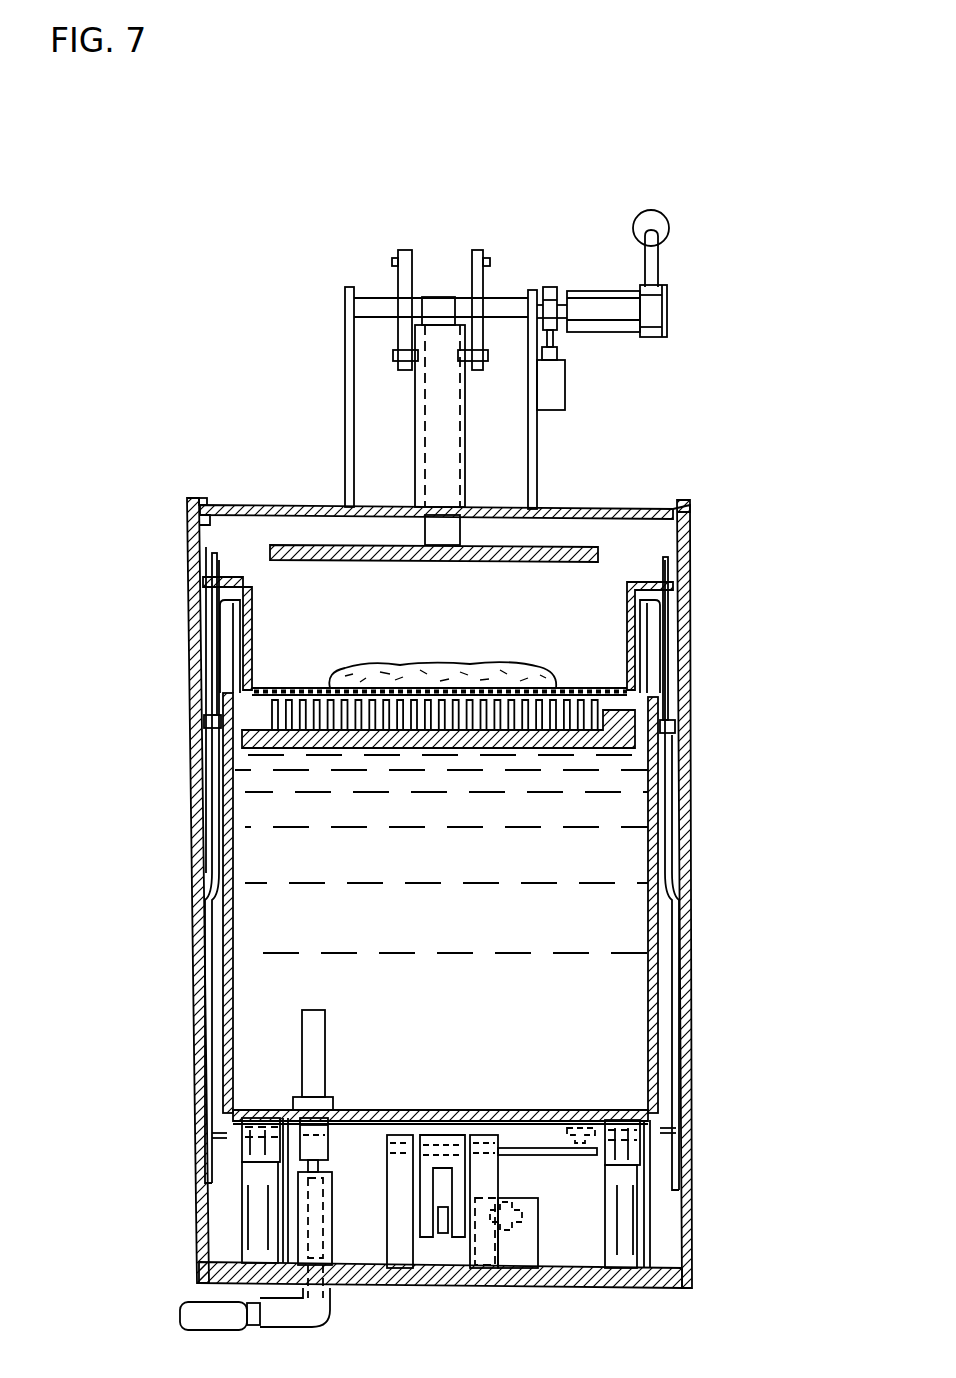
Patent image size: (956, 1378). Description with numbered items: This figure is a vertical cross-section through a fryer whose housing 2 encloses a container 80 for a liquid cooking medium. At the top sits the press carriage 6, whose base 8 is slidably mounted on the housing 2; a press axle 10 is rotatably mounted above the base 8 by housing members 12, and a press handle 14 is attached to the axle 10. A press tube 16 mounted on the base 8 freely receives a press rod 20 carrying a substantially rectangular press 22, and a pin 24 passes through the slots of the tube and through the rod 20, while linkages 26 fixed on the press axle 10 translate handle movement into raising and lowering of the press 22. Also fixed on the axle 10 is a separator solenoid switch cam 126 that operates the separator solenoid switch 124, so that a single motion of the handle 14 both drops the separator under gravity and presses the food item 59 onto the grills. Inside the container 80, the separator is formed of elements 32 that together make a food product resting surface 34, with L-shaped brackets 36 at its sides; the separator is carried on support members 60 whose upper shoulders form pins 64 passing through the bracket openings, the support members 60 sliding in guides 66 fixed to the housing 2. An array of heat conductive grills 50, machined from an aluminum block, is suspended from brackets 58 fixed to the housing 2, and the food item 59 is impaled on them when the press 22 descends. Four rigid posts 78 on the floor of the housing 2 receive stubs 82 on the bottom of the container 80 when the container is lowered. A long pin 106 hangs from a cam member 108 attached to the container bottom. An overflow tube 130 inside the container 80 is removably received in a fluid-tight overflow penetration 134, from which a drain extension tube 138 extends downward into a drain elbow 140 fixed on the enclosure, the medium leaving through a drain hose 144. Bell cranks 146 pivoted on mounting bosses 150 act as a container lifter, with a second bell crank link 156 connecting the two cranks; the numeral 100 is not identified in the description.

The housing 2 is at (195, 995).
The press carriage 6 is at (710, 421).
The base 8 is at (650, 507).
The press axle 10 is at (372, 300).
The housing members 12 is at (345, 475).
The press handle 14 is at (652, 263).
The press tube 16 is at (465, 480).
The press rod 20 is at (425, 528).
The press 22 is at (500, 560).
The pin 24 is at (400, 352).
The linkages 26 is at (388, 270).
The elements 32 is at (592, 683).
The food product resting surface 34 is at (288, 685).
The L-shaped brackets 36 is at (252, 617).
The heat conductive grills 50 is at (603, 717).
The brackets 58 is at (240, 633).
The food item 59 is at (495, 643).
The support members 60 is at (217, 670).
The pin 64 is at (220, 568).
The guides 66 is at (208, 722).
The rigid posts 78 is at (250, 1200).
The container 80 is at (650, 940).
The stubs 82 is at (258, 1135).
The control box 100 is at (520, 1255).
The long pin 106 is at (512, 1178).
The cam member 108 is at (565, 1153).
The separator solenoid switch 124 is at (557, 395).
The separator solenoid switch cam 126 is at (545, 285).
The overflow tube 130 is at (317, 1028).
The overflow penetration 134 is at (325, 1105).
The drain extension tube 138 is at (318, 1240).
The drain elbow 140 is at (315, 1310).
The drain hose 144 is at (190, 1318).
The bell cranks 146 is at (465, 1127).
The mounting bosses 150 is at (398, 1255).
The second bell crank link 156 is at (442, 1237).